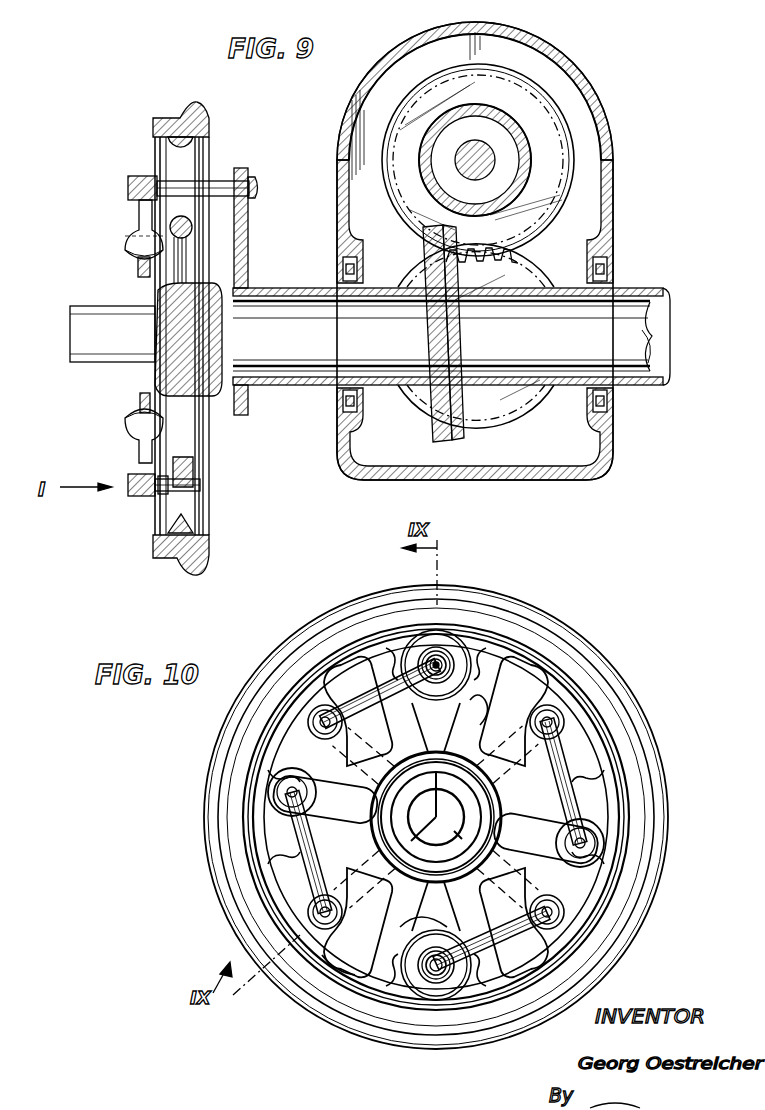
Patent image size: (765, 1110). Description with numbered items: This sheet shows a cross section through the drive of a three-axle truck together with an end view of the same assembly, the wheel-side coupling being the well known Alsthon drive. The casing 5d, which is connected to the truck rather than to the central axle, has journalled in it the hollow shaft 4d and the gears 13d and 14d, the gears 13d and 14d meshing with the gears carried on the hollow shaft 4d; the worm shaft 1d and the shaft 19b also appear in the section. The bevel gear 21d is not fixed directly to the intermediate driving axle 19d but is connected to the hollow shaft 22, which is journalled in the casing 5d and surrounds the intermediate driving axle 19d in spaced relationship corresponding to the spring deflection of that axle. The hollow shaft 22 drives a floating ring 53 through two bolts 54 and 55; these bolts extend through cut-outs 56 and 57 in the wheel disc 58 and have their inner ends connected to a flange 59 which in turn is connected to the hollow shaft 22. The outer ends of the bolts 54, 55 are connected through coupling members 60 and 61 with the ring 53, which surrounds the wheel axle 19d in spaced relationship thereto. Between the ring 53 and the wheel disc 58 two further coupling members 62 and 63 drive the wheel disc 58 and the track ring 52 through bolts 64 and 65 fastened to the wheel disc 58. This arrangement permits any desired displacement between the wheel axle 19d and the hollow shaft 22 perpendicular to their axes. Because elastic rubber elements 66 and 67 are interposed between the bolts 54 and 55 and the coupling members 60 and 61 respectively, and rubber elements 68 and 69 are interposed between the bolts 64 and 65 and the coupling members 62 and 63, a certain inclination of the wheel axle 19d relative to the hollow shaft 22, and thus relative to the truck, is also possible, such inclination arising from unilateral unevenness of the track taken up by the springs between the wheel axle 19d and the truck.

In FIG. 9, the casing 5d is at (597, 100).
In FIG. 9, the worm shaft 1d is at (470, 180).
In FIG. 9, the hollow shaft 4d is at (530, 214).
In FIG. 9, the gear 14d is at (489, 349).
In FIG. 9, the gear 13d is at (498, 415).
In FIG. 9, the bevel gear 21d is at (428, 428).
In FIG. 9, the intermediate driving axle 19d is at (668, 318).
In FIG. 9, the shaft 19b is at (96, 364).
In FIG. 10, the shaft 19b is at (475, 836).
In FIG. 9, the floating ring 53 is at (138, 272).
In FIG. 10, the floating ring 53 is at (395, 868).
In FIG. 9, the track ring 52 is at (175, 560).
In FIG. 10, the track ring 52 is at (548, 622).
In FIG. 9, the wheel disc 58 is at (182, 118).
In FIG. 10, the wheel disc 58 is at (575, 795).
In FIG. 9, the cut-out 56 is at (212, 160).
In FIG. 10, the cut-out 56 is at (462, 676).
In FIG. 9, the flange 59 is at (247, 258).
In FIG. 9, the hollow shaft 22 is at (272, 398).
In FIG. 9, the elastic rubber element 66 is at (140, 176).
In FIG. 10, the elastic rubber element 66 is at (428, 662).
In FIG. 9, the bolt 54 is at (242, 198).
In FIG. 10, the bolt 54 is at (446, 658).
In FIG. 9, the coupling member 60 is at (138, 214).
In FIG. 10, the coupling member 60 is at (352, 706).
In FIG. 9, the coupling member 62 is at (138, 456).
In FIG. 10, the coupling member 62 is at (290, 832).
In FIG. 9, the rubber element 68 is at (138, 500).
In FIG. 10, the rubber element 68 is at (334, 938).
In FIG. 9, the bolt 64 is at (162, 500).
In FIG. 10, the bolt 64 is at (312, 908).
In FIG. 10, the bolt 55 is at (438, 972).
In FIG. 10, the cut-out 57 is at (418, 987).
In FIG. 10, the bolt 65 is at (552, 714).
In FIG. 10, the rubber element 69 is at (562, 736).
In FIG. 10, the coupling member 63 is at (577, 818).
In FIG. 10, the coupling member 61 is at (515, 935).
In FIG. 10, the elastic rubber element 67 is at (418, 942).